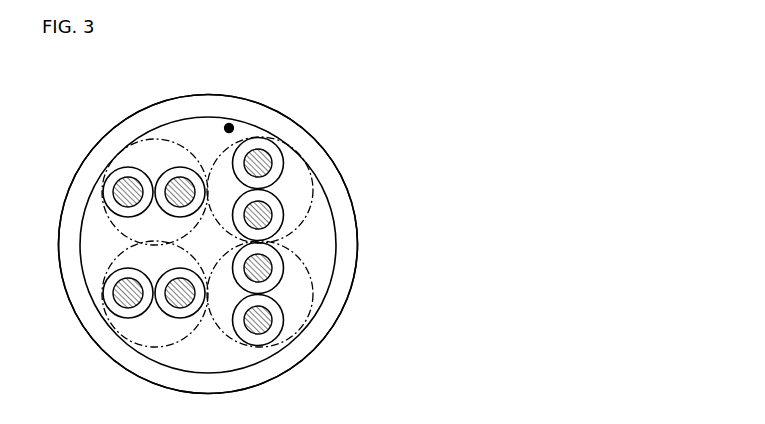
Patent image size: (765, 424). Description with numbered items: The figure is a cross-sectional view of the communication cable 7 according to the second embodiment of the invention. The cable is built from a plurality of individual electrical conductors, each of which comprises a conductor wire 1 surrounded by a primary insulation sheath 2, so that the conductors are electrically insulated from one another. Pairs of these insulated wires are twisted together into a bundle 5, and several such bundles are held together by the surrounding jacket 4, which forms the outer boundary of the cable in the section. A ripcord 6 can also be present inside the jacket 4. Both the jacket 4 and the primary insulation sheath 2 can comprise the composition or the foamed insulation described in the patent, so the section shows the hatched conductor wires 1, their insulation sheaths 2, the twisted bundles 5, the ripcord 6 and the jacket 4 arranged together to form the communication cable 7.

The conductor wire 1 is at (284, 158).
The primary insulation sheath 2 is at (298, 213).
The jacket 4 is at (318, 364).
The bundle 5 is at (321, 296).
The ripcord 6 is at (245, 110).
The communication cable 7 is at (115, 94).